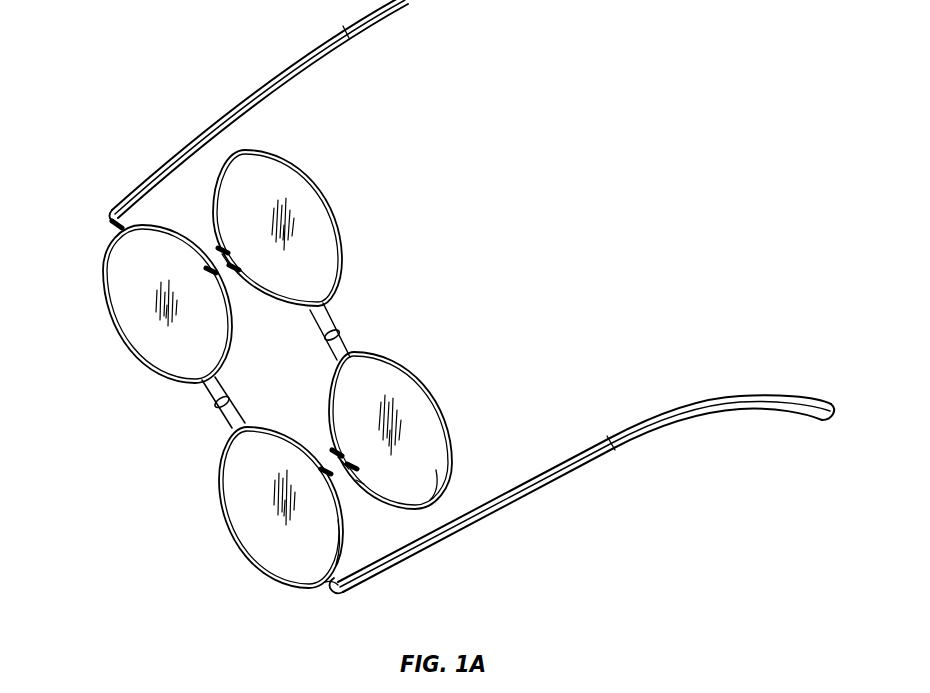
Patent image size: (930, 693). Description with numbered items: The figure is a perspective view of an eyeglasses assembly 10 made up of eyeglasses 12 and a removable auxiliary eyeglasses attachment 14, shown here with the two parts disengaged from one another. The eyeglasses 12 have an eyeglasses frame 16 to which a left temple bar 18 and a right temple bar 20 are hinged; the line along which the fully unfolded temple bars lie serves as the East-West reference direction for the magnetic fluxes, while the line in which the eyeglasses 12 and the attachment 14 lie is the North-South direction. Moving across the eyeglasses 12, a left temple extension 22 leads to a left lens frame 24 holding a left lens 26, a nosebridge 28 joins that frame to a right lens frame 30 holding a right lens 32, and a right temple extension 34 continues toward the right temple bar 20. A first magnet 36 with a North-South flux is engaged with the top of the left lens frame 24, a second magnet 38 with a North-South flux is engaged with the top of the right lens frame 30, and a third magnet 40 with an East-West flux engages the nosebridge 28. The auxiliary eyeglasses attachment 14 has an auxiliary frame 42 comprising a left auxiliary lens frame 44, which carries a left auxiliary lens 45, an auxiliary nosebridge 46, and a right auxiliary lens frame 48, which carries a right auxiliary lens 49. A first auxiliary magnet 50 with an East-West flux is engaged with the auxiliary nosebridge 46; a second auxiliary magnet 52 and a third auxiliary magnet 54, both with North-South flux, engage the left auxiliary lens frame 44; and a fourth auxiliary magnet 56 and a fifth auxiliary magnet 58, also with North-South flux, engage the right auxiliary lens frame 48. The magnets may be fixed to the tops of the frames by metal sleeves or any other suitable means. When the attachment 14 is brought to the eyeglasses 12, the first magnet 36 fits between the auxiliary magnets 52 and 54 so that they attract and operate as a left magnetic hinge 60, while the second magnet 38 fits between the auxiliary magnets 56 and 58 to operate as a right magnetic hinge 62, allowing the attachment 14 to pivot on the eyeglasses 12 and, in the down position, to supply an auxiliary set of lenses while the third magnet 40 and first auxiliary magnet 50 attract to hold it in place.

The eyeglasses assembly 10 is at (156, 42).
The eyeglasses 12 is at (204, 512).
The auxiliary eyeglasses attachment 14 is at (454, 388).
The eyeglasses frame 16 is at (345, 533).
The left temple bar 18 is at (538, 493).
The right temple bar 20 is at (324, 52).
The left temple extension 22 is at (330, 590).
The left lens frame 24 is at (264, 568).
The left lens 26 is at (262, 538).
The nosebridge 28 is at (208, 405).
The right lens frame 30 is at (106, 291).
The right lens 32 is at (142, 337).
The right temple extension 34 is at (110, 226).
The first magnet 36 is at (345, 506).
The second magnet 38 is at (216, 278).
The third magnet 40 is at (230, 402).
The auxiliary frame 42 is at (336, 222).
The left auxiliary lens frame 44 is at (405, 364).
The left auxiliary lens 45 is at (442, 478).
The auxiliary nosebridge 46 is at (350, 337).
The right auxiliary lens frame 48 is at (314, 184).
The right auxiliary lens 49 is at (265, 166).
The first auxiliary magnet 50 is at (344, 326).
The second auxiliary magnet 52 is at (365, 482).
The third auxiliary magnet 54 is at (335, 449).
The fourth auxiliary magnet 56 is at (237, 272).
The fifth auxiliary magnet 58 is at (222, 248).
The left magnetic hinge 60 is at (356, 449).
The right magnetic hinge 62 is at (238, 246).